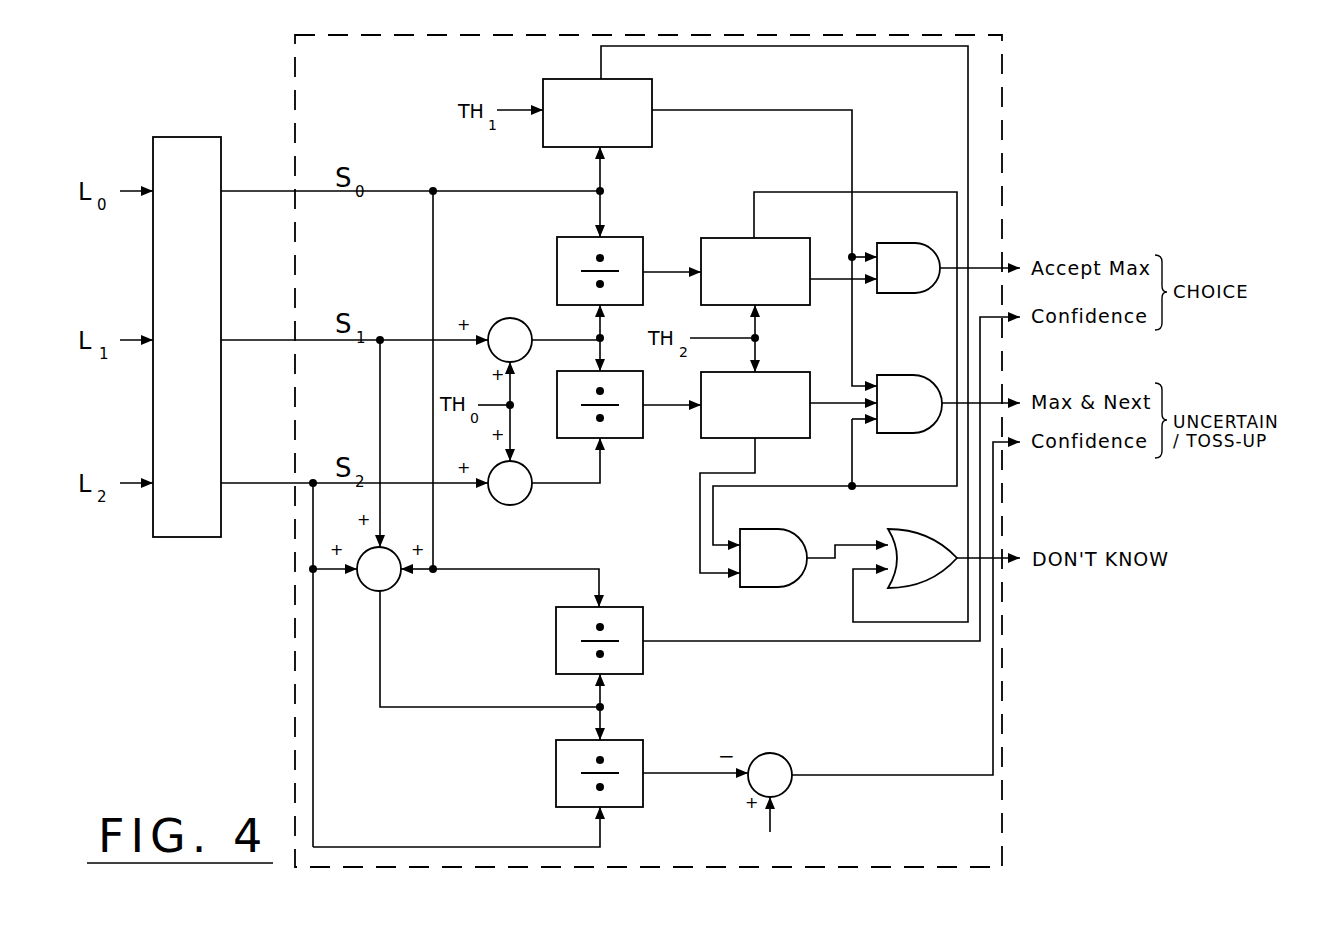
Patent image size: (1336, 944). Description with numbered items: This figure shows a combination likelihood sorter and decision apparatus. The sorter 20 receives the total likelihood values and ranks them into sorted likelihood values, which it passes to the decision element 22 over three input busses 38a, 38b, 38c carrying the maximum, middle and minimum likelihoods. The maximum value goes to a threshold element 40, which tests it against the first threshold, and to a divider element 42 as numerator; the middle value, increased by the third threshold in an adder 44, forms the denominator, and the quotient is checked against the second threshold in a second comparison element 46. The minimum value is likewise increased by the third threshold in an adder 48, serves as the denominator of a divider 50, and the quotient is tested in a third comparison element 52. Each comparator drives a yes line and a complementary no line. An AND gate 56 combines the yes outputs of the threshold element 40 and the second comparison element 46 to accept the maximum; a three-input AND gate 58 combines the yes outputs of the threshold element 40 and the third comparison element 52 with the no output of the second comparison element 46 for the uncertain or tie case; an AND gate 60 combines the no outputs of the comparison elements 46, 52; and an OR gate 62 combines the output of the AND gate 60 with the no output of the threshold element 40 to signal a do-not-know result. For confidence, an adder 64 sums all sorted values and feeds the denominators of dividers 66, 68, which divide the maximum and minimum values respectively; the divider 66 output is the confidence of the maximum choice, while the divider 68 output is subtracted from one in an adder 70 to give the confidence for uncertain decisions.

The sorter 20 is at (187, 337).
The decision element 22 is at (648, 451).
The input bus 38a is at (228, 191).
The input bus 38b is at (228, 340).
The input bus 38c is at (228, 483).
The threshold element 40 is at (640, 79).
The divider element 42 is at (637, 237).
The adder 44 is at (516, 318).
The second comparison element 46 is at (795, 238).
The adder 48 is at (506, 505).
The divider 50 is at (630, 438).
The third comparison element 52 is at (788, 438).
The AND gate 56 is at (948, 268).
The AND gate 58 is at (948, 404).
The AND gate 60 is at (814, 558).
The OR gate 62 is at (954, 558).
The adder 64 is at (390, 588).
The divider 66 is at (643, 617).
The divider 68 is at (643, 750).
The adder 70 is at (786, 792).